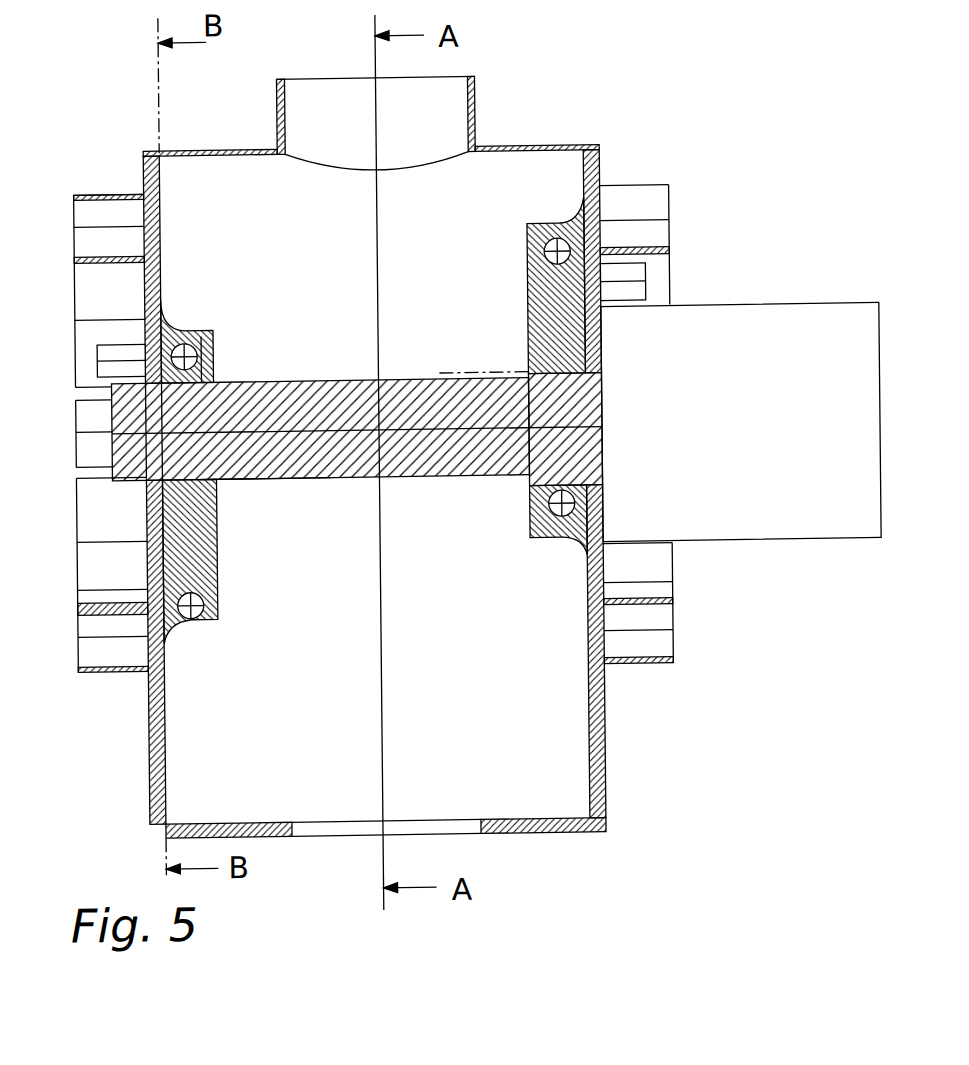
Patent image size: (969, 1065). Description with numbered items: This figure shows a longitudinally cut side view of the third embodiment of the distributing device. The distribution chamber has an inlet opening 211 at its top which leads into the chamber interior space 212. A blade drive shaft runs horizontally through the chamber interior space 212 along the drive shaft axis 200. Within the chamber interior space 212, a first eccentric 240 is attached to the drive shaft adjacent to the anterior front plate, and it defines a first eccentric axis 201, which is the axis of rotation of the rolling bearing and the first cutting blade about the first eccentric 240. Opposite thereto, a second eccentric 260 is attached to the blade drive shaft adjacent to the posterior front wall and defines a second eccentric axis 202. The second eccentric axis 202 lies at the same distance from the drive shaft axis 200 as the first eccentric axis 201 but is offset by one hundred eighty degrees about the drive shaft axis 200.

The drive shaft axis 200 is at (338, 430).
The first eccentric axis 201 is at (258, 482).
The second eccentric axis 202 is at (467, 372).
The inlet opening 211 is at (341, 157).
The chamber interior space 212 is at (334, 271).
The first eccentric 240 is at (193, 550).
The second eccentric 260 is at (546, 320).